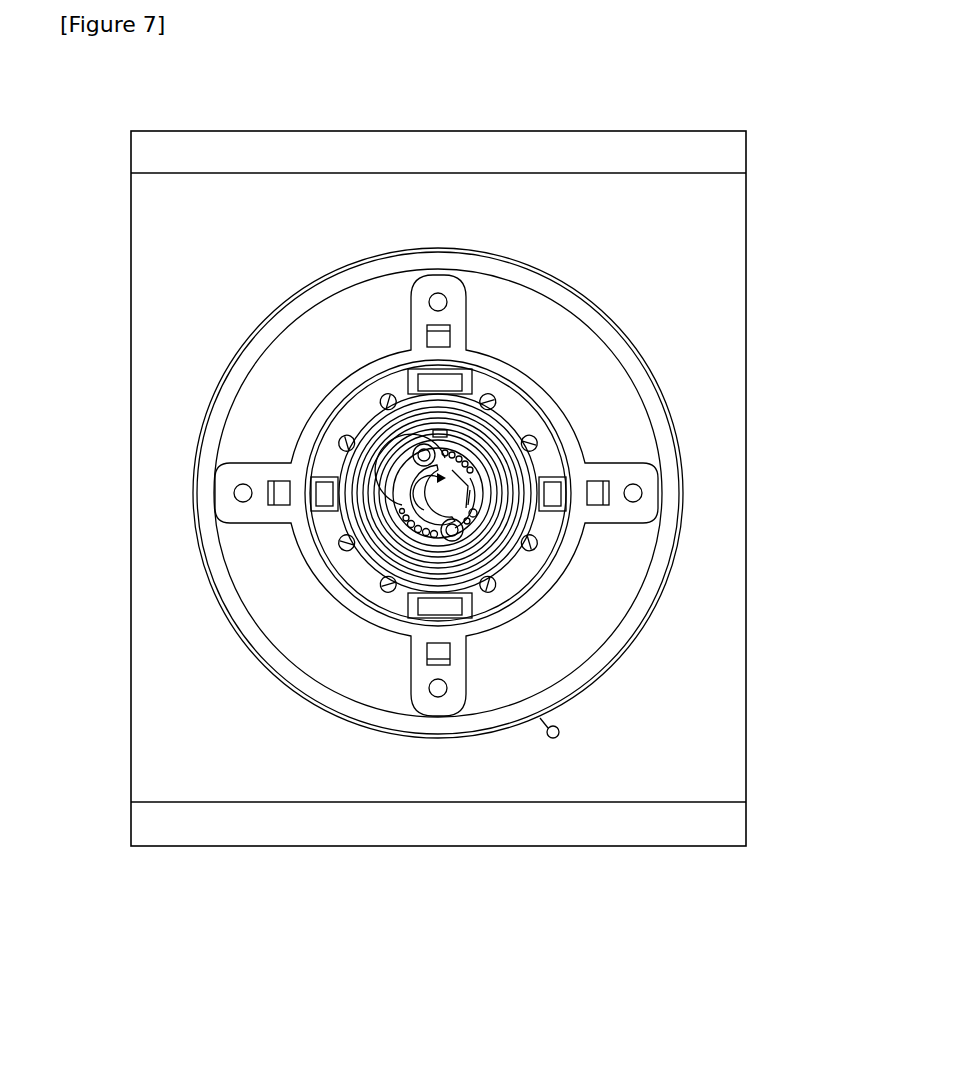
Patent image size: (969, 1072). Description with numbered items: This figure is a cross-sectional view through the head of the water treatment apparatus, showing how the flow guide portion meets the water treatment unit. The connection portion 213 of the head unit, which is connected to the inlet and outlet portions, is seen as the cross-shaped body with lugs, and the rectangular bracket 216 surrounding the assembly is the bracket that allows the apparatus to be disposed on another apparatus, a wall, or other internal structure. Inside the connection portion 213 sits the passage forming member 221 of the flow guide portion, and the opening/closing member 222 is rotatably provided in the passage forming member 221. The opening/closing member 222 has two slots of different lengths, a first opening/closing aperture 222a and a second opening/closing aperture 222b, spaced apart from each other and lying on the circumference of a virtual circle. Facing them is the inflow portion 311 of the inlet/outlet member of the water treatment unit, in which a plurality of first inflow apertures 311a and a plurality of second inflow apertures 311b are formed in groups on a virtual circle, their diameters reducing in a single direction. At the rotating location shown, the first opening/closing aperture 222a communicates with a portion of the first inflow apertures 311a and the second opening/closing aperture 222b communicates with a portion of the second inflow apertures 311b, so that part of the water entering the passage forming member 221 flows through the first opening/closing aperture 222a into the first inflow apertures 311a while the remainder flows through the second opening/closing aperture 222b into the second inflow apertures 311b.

The bracket 216 is at (657, 150).
The connection portion 213 is at (570, 565).
The passage forming member 221 is at (353, 568).
The inflow portion 311 is at (400, 495).
The first inflow apertures 311a is at (410, 525).
The second inflow apertures 311b is at (447, 440).
The opening/closing member 222 is at (485, 498).
The first opening/closing aperture 222a is at (422, 532).
The second opening/closing aperture 222b is at (467, 485).